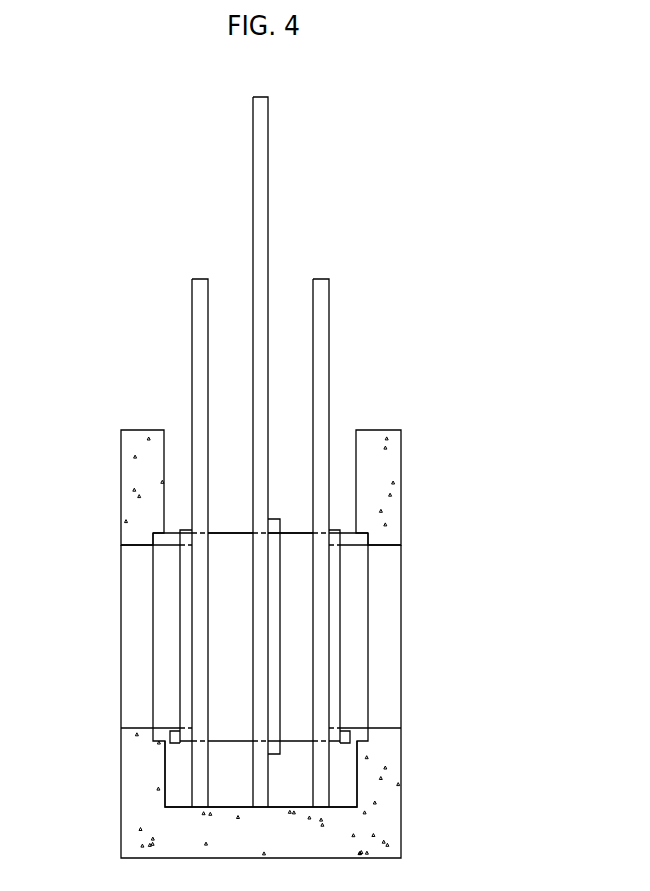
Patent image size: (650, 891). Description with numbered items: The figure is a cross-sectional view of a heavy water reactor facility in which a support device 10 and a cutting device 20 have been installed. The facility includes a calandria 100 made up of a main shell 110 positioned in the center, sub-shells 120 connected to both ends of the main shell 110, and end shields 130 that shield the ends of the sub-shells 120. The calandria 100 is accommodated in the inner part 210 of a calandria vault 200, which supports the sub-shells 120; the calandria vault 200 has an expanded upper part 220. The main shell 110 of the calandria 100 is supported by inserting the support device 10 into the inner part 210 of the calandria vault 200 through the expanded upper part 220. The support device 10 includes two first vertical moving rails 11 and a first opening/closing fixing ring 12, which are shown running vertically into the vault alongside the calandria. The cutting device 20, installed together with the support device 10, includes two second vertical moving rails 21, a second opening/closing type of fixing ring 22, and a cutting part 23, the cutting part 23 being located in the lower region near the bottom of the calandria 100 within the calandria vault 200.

The calandria vault 200 is at (132, 463).
The inner part 210 is at (233, 517).
The upper part 220 is at (287, 439).
The calandria 100 is at (276, 670).
The main shell 110 is at (300, 657).
The sub-shells 120 is at (162, 568).
The end shields 130 is at (133, 597).
The support device 10 is at (341, 636).
The first vertical moving rails 11 is at (262, 566).
The first opening/closing fixing ring 12 is at (278, 596).
The cutting device 20 is at (250, 668).
The second vertical moving rails 21 is at (200, 640).
The second opening/closing type of fixing ring 22 is at (185, 672).
The cutting part 23 is at (168, 735).